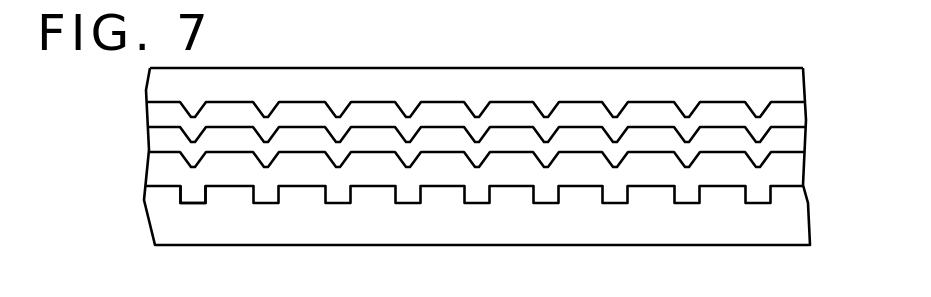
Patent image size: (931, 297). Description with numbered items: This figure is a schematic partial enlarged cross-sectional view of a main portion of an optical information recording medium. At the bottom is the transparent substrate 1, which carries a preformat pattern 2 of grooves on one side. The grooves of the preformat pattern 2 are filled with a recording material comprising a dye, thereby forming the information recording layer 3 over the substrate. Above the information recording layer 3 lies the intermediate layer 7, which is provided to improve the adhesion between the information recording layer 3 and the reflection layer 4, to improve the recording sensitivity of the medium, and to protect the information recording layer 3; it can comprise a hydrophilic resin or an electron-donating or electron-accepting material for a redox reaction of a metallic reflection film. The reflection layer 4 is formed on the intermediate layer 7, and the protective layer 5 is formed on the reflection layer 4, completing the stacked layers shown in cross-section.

The transparent substrate 1 is at (783, 225).
The preformat pattern 2 is at (192, 190).
The information recording layer 3 is at (783, 170).
The reflection layer 4 is at (797, 115).
The protective layer 5 is at (785, 88).
The intermediate layer 7 is at (795, 138).